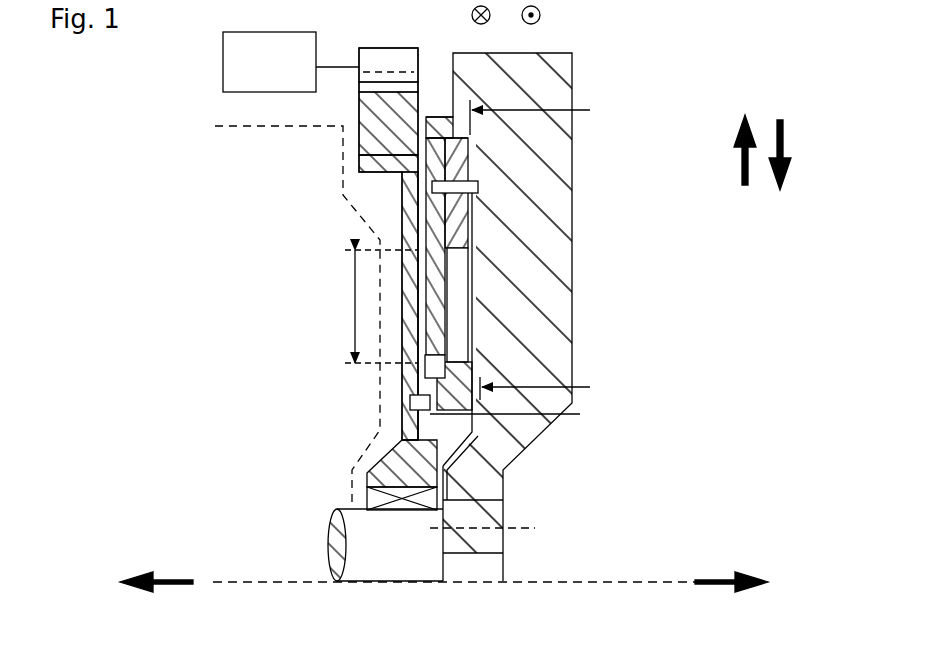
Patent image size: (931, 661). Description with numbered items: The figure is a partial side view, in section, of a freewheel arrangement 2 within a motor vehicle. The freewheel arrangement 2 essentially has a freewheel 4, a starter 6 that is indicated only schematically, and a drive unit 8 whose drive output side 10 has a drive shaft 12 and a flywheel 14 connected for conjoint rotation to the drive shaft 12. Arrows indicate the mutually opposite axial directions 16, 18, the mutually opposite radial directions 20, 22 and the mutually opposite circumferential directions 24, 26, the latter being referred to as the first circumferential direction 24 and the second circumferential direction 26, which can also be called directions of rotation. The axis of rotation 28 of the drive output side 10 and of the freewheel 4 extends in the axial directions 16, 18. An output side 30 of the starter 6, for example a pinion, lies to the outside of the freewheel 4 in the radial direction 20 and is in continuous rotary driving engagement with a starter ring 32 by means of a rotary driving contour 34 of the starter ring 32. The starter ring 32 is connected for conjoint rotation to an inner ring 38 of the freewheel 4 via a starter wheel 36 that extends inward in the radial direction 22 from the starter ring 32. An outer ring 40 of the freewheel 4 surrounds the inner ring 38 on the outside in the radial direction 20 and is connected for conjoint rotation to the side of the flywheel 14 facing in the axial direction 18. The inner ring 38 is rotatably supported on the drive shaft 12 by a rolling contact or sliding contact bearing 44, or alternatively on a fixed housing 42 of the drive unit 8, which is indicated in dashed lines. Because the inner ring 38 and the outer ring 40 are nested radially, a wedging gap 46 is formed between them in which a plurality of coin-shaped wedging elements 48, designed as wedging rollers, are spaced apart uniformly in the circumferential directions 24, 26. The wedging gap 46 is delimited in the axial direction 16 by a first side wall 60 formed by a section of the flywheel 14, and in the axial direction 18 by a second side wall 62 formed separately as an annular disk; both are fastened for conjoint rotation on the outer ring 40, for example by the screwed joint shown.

The freewheel arrangement 2 is at (660, 88).
The freewheel 4 is at (534, 317).
The starter 6 is at (256, 79).
The drive unit 8 is at (243, 427).
The drive output side 10 is at (480, 572).
The drive shaft 12 is at (380, 565).
The flywheel 14 is at (560, 142).
The axial direction 16 is at (713, 588).
The axial direction 18 is at (160, 586).
The radial direction 20 is at (740, 162).
The radial direction 22 is at (783, 143).
The first circumferential direction 24 is at (471, 15).
The second circumferential direction 26 is at (541, 15).
The axis of rotation 28 is at (612, 584).
The output side of the starter 30 is at (374, 58).
The starter ring 32 is at (267, 221).
The rotary driving contour 34 is at (396, 84).
The starter wheel 36 is at (412, 237).
The inner ring 38 is at (418, 388).
The outer ring 40 is at (468, 210).
The housing 42 is at (258, 126).
The rolling contact or sliding contact bearing 44 is at (425, 497).
The wedging gap 46 is at (480, 331).
The wedging elements 48 is at (455, 297).
The first side wall 60 is at (474, 318).
The second side wall 62 is at (433, 222).